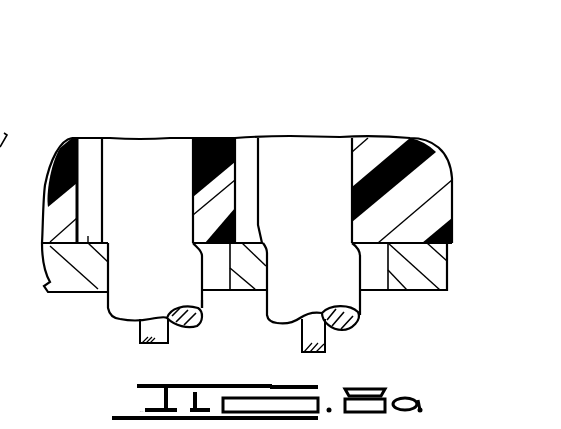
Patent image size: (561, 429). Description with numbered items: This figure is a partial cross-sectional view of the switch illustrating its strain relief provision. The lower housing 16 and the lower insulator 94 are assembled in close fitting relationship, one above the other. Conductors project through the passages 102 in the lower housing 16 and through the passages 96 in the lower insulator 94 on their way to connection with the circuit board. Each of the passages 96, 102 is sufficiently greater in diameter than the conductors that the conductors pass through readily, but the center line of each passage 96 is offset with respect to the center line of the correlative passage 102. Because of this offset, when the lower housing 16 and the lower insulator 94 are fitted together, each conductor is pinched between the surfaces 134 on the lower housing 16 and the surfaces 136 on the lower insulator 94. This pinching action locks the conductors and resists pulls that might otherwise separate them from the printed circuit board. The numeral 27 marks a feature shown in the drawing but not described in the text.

The lower housing 16 is at (55, 294).
The cord 27 is at (113, 317).
The lower insulator 94 is at (58, 148).
The passages in the lower insulator 96 is at (233, 156).
The passages in the lower housing 102 is at (232, 270).
The surfaces on lower housing 134 is at (113, 262).
The surfaces on lower insulator 136 is at (186, 141).